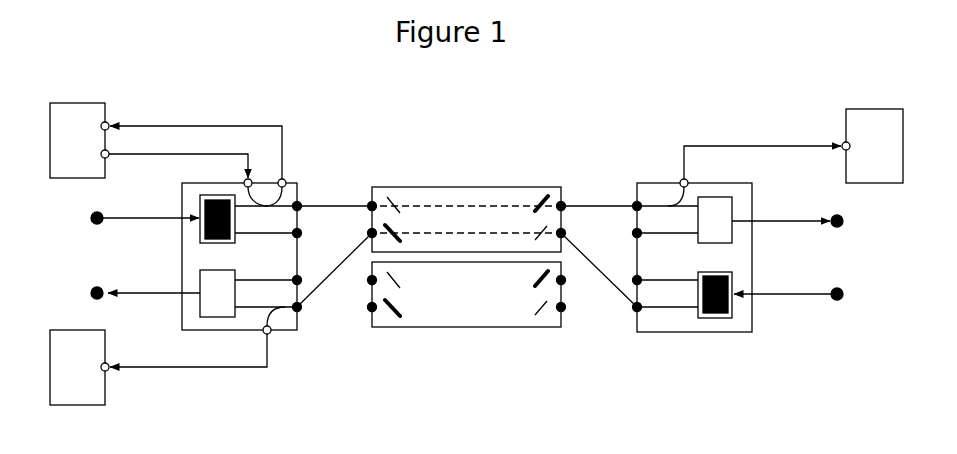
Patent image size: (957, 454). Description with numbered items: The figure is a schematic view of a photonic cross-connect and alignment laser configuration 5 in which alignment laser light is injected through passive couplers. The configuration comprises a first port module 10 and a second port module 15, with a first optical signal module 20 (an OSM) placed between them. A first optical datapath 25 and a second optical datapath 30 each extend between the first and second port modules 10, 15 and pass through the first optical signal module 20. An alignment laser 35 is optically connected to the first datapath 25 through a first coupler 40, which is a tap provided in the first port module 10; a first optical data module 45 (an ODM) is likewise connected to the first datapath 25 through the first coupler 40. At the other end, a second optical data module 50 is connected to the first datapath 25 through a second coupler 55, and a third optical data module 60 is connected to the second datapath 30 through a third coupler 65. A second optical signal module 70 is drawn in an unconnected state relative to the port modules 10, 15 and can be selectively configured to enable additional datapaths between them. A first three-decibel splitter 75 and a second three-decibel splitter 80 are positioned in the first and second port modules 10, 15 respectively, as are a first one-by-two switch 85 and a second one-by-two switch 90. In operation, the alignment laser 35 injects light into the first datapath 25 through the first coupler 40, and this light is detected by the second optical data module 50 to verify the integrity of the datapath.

The photonic cross-connect and alignment laser configuration 5 is at (609, 86).
The first port module 10 is at (180, 282).
The second port module 15 is at (643, 180).
The first optical signal module 20 is at (427, 190).
The first optical datapath 25 is at (325, 203).
The second optical datapath 30 is at (318, 296).
The alignment laser 35 is at (99, 157).
The first coupler 40 is at (275, 211).
The first optical data module 45 is at (97, 107).
The second optical data module 50 is at (883, 109).
The second coupler 55 is at (684, 177).
The third optical data module 60 is at (97, 398).
The third coupler 65 is at (278, 339).
The second optical signal module 70 is at (455, 328).
The first 3-dB splitter 75 is at (200, 235).
The second 3-dB splitter 80 is at (727, 309).
The first 1×2 switch 85 is at (205, 307).
The second 1×2 switch 90 is at (727, 239).